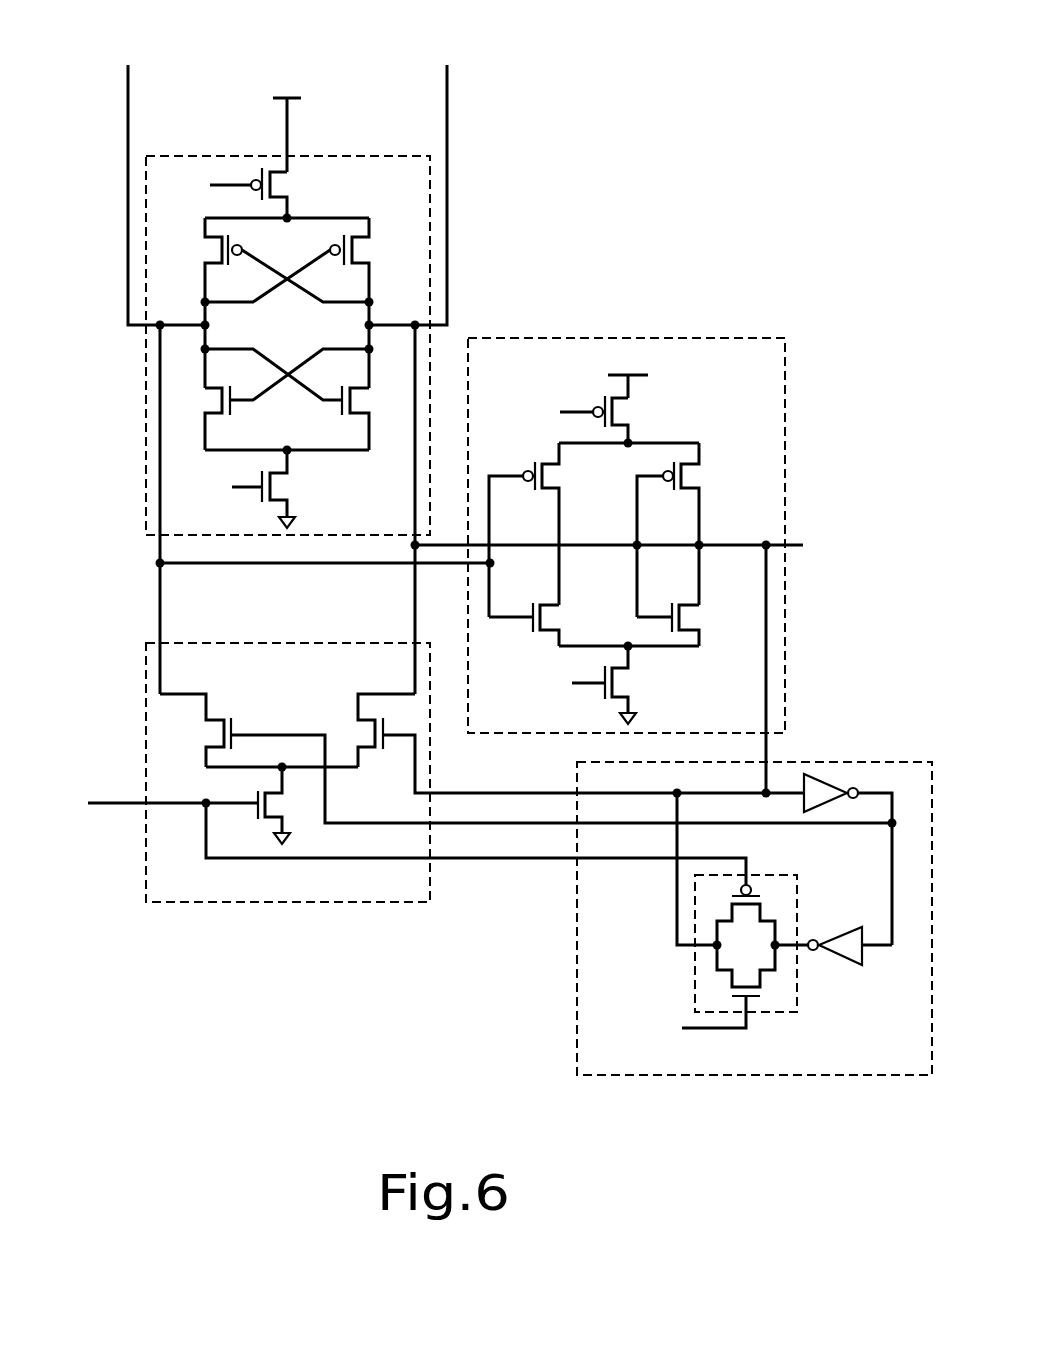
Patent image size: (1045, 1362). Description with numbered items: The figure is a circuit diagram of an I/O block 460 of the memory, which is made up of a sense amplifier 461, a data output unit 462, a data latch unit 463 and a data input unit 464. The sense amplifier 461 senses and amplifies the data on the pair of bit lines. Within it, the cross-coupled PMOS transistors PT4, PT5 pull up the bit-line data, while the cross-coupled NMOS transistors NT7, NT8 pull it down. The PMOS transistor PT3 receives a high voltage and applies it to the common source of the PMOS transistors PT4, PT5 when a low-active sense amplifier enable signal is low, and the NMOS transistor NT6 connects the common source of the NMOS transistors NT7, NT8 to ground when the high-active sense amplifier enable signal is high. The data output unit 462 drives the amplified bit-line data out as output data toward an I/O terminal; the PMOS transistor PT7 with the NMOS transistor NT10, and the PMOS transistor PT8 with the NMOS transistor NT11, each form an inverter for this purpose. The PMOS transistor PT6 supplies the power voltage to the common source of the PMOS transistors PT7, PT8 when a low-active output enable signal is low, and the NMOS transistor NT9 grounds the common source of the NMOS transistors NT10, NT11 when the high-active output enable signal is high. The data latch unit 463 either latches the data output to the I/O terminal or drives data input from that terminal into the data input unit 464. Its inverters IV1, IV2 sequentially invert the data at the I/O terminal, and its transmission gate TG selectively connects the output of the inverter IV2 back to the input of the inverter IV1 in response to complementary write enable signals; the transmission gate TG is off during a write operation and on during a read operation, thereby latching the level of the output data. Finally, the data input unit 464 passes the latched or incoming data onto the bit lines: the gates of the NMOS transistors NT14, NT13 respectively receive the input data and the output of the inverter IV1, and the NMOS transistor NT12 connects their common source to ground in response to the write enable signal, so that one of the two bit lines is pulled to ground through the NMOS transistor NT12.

The I/O block 460 is at (686, 78).
The sense amplifier 461 is at (146, 405).
The data output unit 462 is at (785, 338).
The data latch unit 463 is at (577, 923).
The data input unit 464 is at (146, 745).
The PMOS transistor PT3 is at (251, 193).
The PMOS transistor PT4 is at (266, 303).
The PMOS transistor PT5 is at (310, 303).
The PMOS transistor PT6 is at (594, 419).
The PMOS transistor PT7 is at (547, 530).
The PMOS transistor PT8 is at (693, 530).
The NMOS transistor NT6 is at (268, 489).
The NMOS transistor NT7 is at (264, 399).
The NMOS transistor NT8 is at (309, 399).
The NMOS transistor NT9 is at (606, 685).
The NMOS transistor NT10 is at (553, 624).
The NMOS transistor NT11 is at (698, 624).
The NMOS transistor NT12 is at (172, 807).
The NMOS transistor NT13 is at (526, 756).
The NMOS transistor NT14 is at (551, 743).
The inverter IV1 is at (851, 852).
The inverter IV2 is at (850, 961).
The transmission gate TG is at (797, 902).